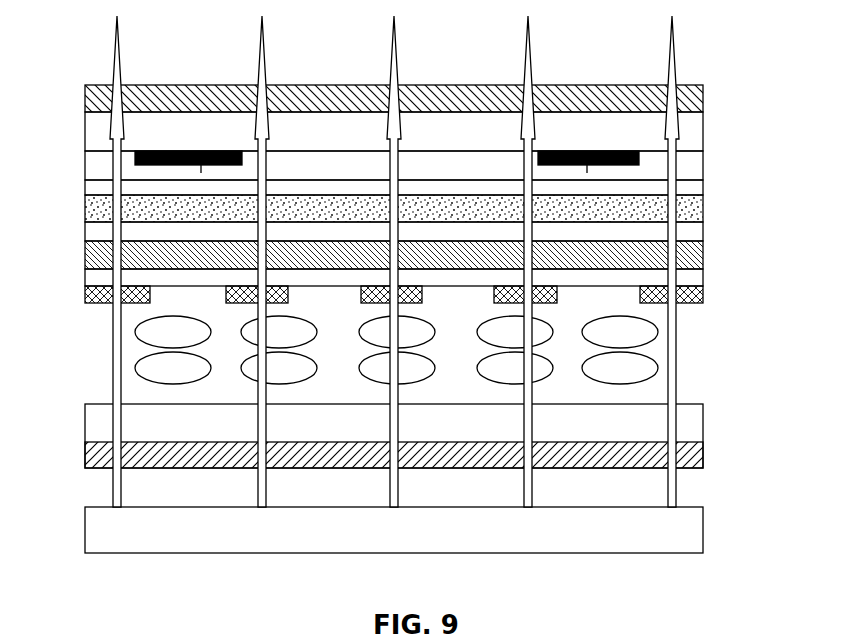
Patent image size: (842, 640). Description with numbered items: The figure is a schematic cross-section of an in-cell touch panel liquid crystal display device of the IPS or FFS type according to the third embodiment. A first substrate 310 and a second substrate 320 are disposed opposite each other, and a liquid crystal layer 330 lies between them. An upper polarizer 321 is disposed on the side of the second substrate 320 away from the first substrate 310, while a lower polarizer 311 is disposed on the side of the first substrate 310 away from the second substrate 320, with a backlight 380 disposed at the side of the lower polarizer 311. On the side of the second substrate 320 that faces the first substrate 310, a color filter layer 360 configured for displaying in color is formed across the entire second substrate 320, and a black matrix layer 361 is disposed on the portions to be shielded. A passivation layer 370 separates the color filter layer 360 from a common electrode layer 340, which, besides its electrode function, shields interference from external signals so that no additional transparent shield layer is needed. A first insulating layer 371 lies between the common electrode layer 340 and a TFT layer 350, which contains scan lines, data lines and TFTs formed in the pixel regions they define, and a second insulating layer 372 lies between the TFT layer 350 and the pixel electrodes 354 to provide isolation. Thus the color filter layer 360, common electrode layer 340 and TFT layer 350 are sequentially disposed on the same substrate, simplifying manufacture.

The first substrate 310 is at (688, 429).
The lower polarizer 311 is at (697, 455).
The second substrate 320 is at (688, 135).
The upper polarizer 321 is at (688, 103).
The liquid crystal layer 330 is at (645, 374).
The common electrode layer 340 is at (688, 213).
The TFT layer 350 is at (688, 258).
The pixel electrodes 354 is at (688, 298).
The color filter layer 360 is at (688, 168).
The black matrix layer 361 is at (135, 157).
The passivation layer 370 is at (688, 188).
The first insulating layer 371 is at (97, 236).
The second insulating layer 372 is at (97, 284).
The backlight 380 is at (685, 535).